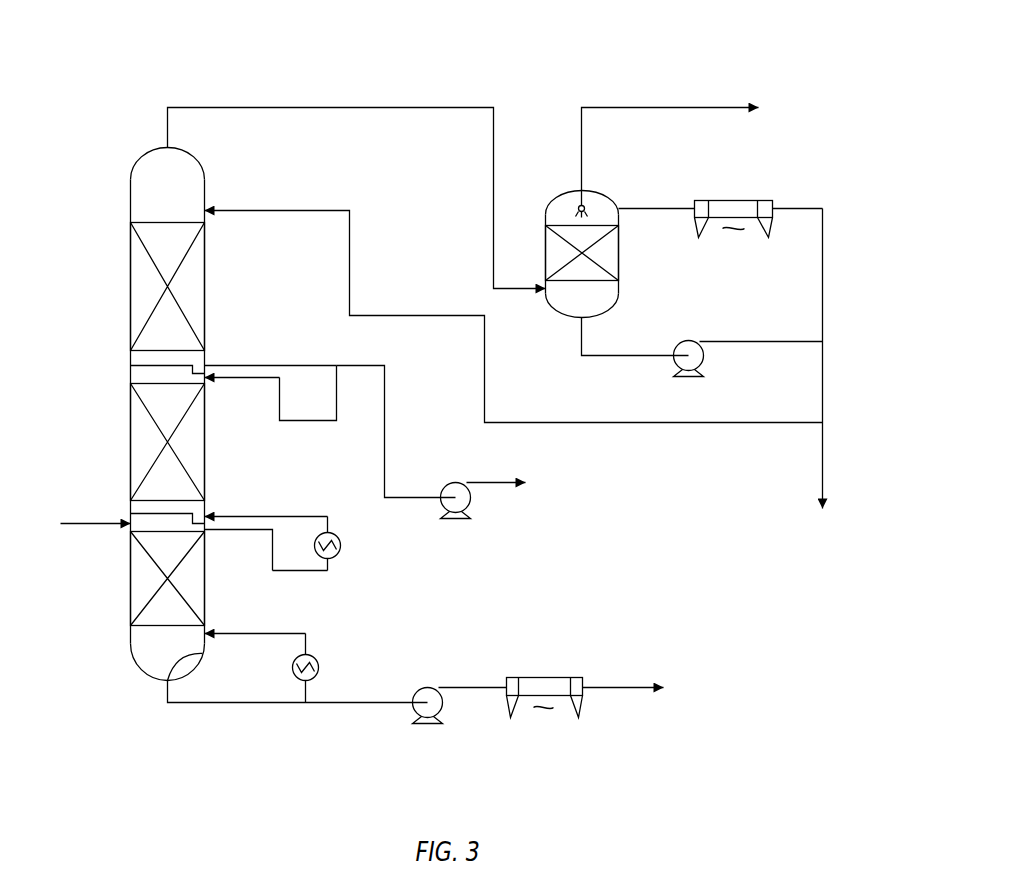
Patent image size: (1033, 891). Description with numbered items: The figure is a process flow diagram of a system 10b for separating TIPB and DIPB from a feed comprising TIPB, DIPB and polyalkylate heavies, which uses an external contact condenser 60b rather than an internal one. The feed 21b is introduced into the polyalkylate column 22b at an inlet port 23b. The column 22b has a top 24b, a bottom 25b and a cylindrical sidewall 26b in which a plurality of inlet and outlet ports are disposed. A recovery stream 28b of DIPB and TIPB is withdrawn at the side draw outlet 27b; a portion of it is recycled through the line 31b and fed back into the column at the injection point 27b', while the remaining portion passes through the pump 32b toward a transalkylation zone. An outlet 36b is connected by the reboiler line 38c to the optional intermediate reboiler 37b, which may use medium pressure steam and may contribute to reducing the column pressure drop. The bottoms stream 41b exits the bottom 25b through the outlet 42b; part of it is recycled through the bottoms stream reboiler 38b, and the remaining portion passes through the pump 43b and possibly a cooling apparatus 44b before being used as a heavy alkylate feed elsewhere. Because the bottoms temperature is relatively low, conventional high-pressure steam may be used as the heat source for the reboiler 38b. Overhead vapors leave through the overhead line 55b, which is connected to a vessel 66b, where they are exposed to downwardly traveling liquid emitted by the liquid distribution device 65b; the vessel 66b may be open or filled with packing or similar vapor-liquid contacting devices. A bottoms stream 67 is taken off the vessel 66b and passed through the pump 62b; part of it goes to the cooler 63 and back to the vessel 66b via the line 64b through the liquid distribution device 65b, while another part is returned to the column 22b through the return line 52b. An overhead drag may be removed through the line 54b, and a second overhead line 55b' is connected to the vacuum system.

The system 10b is at (770, 41).
The external contact condenser 60b is at (850, 141).
The polyalkylate column 22b is at (140, 375).
The top 24b is at (184, 151).
The bottom 25b is at (143, 664).
The outlet 42b is at (206, 662).
The cylindrical sidewall 26b is at (138, 371).
The inlet port 23b is at (142, 512).
The feed 21b is at (96, 548).
The side draw outlet 27b is at (271, 351).
The injection point 27b' is at (242, 391).
The line 31b is at (324, 409).
The recovery stream 28b is at (396, 432).
The pump 32b is at (483, 485).
The outlet 36b is at (266, 544).
The intermediate reboiler 37b is at (348, 536).
The reboiler line 38c is at (284, 588).
The bottoms stream reboiler 38b is at (279, 662).
The bottoms stream 41b is at (269, 694).
The pump 43b is at (460, 690).
The cooling apparatus 44b is at (585, 680).
The overhead line 55b is at (357, 183).
The vessel 66b is at (594, 239).
The liquid distribution device 65b is at (557, 194).
The second overhead line 55b' is at (670, 133).
The line 64b is at (657, 197).
The cooler 63 is at (759, 203).
The line 54b is at (850, 359).
The bottoms stream 67 is at (635, 337).
The pump 62b is at (748, 343).
The return line 52b is at (514, 332).